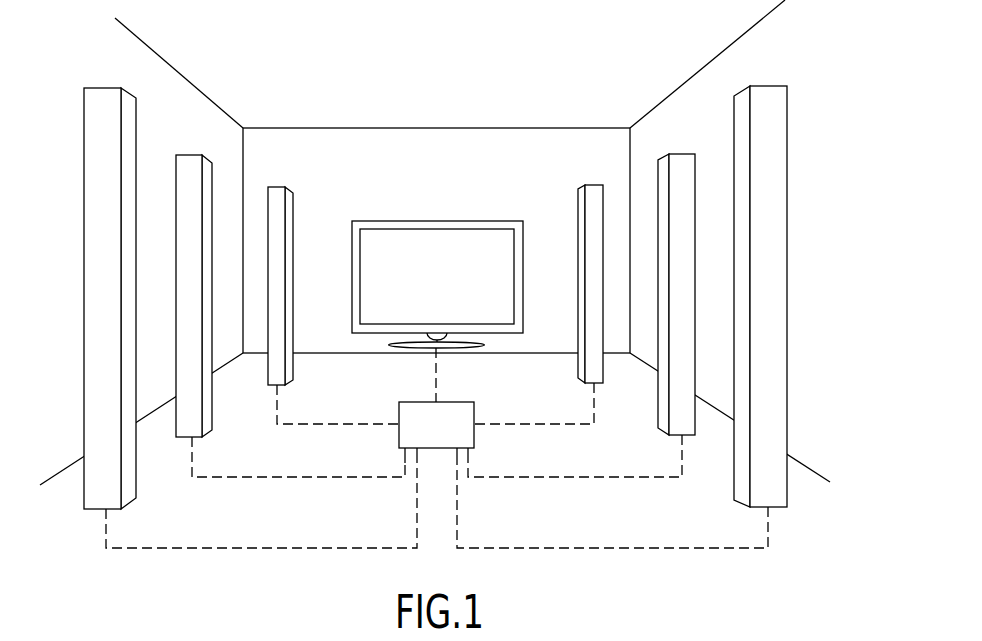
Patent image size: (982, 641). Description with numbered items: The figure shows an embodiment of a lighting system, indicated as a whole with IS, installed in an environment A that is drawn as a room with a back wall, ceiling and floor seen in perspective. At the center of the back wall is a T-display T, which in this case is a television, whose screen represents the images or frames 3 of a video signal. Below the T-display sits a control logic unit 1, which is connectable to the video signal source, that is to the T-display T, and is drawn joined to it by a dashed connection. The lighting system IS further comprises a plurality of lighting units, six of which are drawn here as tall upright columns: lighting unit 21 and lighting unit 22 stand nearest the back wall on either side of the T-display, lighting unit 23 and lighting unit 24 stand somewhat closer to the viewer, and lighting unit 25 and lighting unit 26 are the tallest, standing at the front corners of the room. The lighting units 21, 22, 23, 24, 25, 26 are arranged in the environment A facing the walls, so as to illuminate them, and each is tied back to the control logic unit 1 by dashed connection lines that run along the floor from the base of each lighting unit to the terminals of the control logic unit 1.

The lighting system IS is at (435, 242).
The T-display T is at (378, 170).
The environment A is at (447, 106).
The images or frames 3 is at (463, 229).
The control logic unit 1 is at (445, 440).
The lighting unit 21 is at (293, 363).
The lighting unit 22 is at (578, 362).
The lighting unit 23 is at (212, 420).
The lighting unit 24 is at (658, 424).
The lighting unit 25 is at (136, 487).
The lighting unit 26 is at (734, 487).